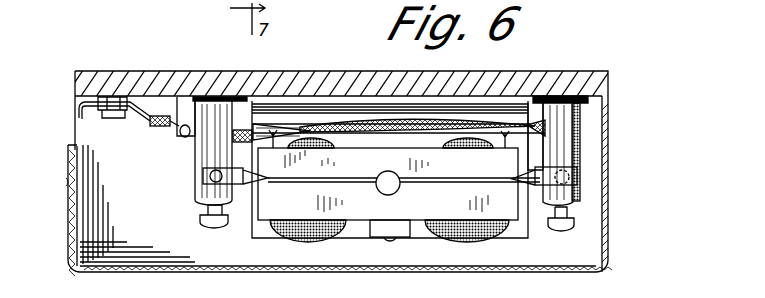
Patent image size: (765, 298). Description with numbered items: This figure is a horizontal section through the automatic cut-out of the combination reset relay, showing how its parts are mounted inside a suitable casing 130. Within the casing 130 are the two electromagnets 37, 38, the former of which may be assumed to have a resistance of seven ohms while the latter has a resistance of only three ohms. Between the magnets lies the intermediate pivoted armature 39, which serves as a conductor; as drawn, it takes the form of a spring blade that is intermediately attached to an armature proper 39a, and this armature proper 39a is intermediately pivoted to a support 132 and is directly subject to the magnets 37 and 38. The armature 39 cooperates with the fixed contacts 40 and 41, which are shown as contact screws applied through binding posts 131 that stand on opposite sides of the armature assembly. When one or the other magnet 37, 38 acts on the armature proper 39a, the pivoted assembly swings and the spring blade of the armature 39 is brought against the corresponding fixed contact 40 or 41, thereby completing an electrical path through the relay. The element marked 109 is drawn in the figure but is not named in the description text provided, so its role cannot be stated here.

The casing 130 is at (573, 84).
The binding posts 131 is at (242, 90).
The contact lead 109 is at (183, 142).
The fixed contacts 41 is at (194, 183).
The fixed contacts 40 is at (577, 173).
The support 132 is at (403, 232).
The armature 39 is at (332, 178).
The armature proper 39a is at (430, 130).
The electromagnet 38 is at (321, 240).
The electromagnet 37 is at (474, 240).